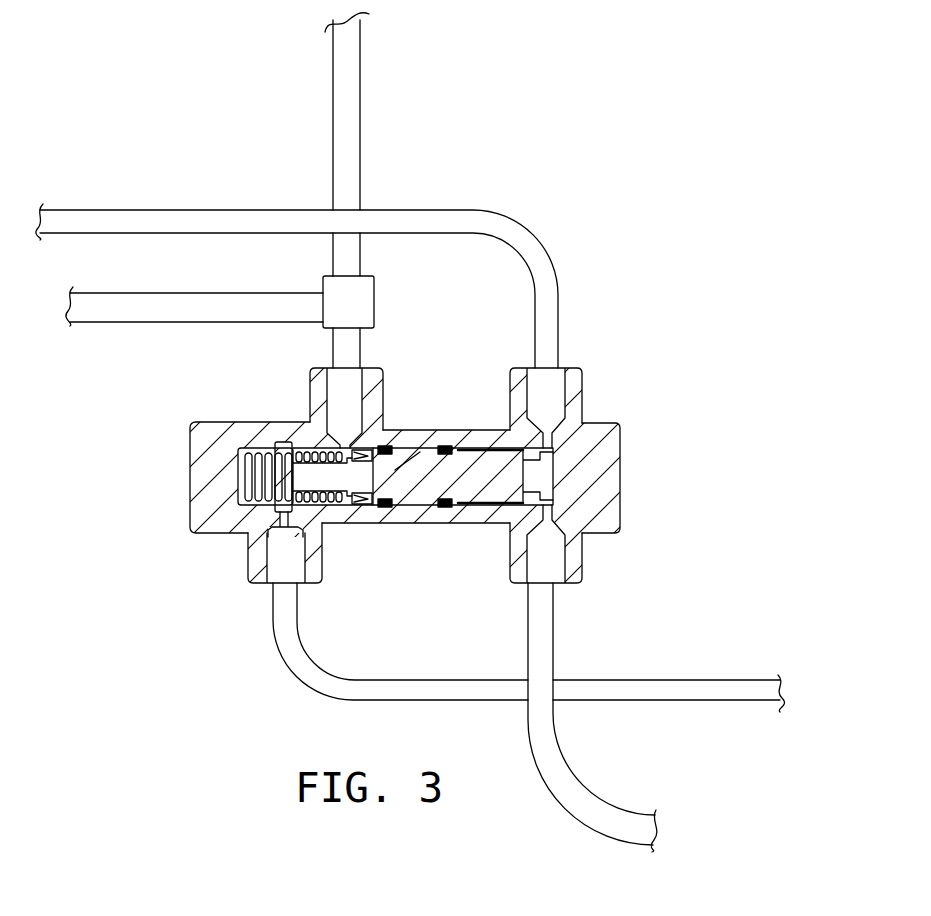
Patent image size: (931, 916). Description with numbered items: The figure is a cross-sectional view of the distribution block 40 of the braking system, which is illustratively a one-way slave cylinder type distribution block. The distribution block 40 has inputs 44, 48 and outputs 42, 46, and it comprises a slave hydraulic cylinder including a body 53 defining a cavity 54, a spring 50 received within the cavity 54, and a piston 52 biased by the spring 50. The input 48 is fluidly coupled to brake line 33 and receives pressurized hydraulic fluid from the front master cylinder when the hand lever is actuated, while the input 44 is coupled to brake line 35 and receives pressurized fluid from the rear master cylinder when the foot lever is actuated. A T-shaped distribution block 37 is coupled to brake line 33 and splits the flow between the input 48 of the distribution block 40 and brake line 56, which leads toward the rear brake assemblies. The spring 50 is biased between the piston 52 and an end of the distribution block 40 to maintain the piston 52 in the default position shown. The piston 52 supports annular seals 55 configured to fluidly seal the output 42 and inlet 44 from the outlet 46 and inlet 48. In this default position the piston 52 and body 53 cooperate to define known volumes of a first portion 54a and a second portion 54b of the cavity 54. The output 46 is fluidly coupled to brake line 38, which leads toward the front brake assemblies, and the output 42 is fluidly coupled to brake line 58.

The brake line 33 is at (357, 83).
The brake line 35 is at (555, 722).
The distribution block 37 is at (374, 300).
The brake line 38 is at (690, 678).
The distribution block 40 is at (670, 448).
The output 42 is at (582, 380).
The input 44 is at (582, 558).
The output 46 is at (248, 550).
The input 48 is at (383, 385).
The spring 50 is at (245, 478).
The piston 52 is at (410, 472).
The body 53 is at (610, 487).
The cavity 54 is at (468, 510).
The first portion 54a is at (287, 442).
The second portion 54b is at (553, 450).
The annular seals 55 is at (445, 507).
The brake line 56 is at (152, 315).
The brake line 58 is at (435, 216).